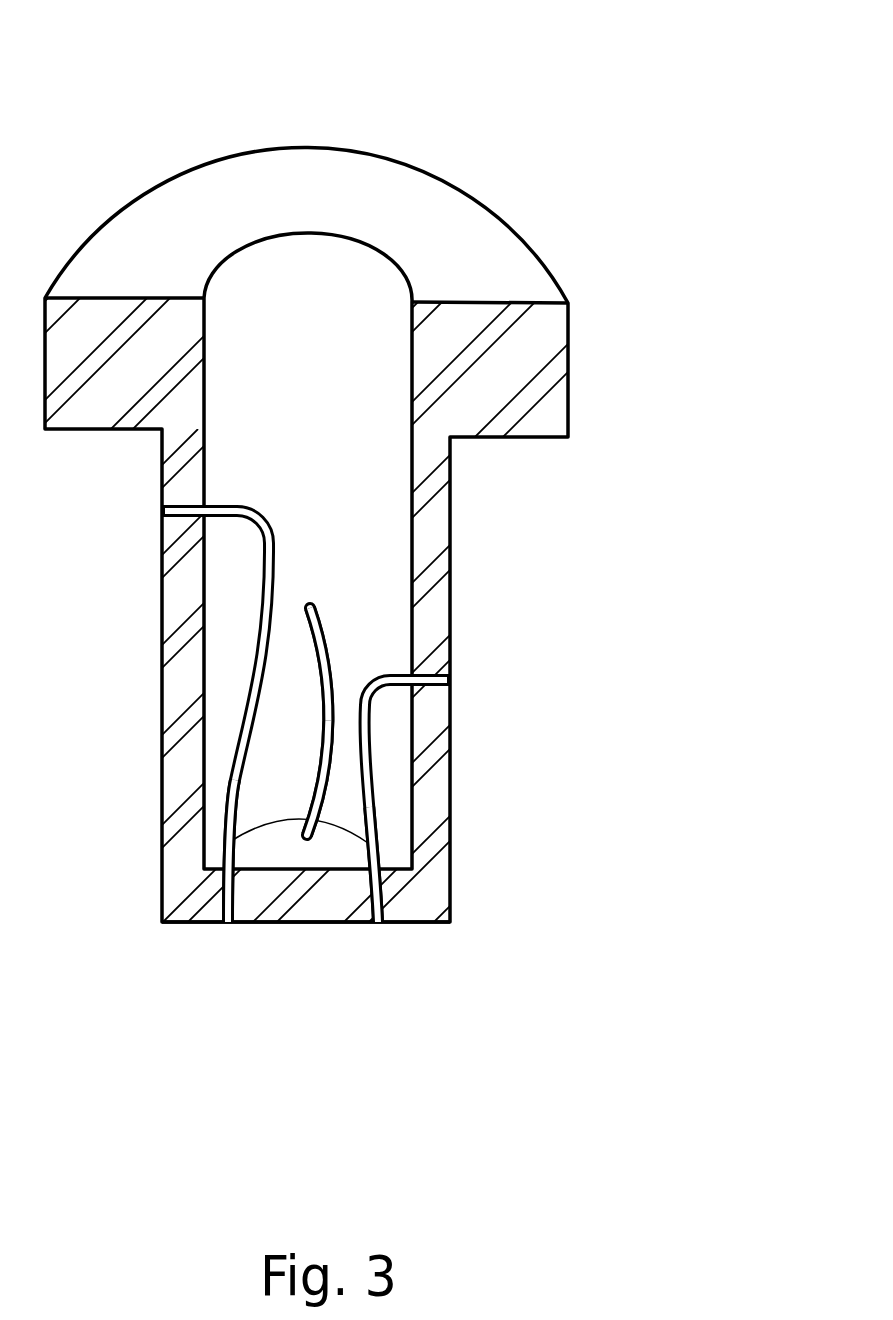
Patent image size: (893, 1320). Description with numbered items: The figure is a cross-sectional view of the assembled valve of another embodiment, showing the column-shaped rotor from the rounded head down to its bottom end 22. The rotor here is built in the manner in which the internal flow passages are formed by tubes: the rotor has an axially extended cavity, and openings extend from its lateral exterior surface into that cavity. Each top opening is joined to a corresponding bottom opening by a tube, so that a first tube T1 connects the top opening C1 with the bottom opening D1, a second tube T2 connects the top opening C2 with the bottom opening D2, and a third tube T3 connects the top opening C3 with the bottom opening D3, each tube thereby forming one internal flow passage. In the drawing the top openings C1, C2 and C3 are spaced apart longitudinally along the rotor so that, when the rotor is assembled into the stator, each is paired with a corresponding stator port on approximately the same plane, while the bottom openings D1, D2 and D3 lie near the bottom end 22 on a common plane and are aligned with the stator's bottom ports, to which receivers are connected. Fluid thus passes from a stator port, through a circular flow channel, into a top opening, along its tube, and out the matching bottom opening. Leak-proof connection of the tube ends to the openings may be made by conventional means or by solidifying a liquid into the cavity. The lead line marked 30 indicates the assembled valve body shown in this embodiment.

The cap body 30 is at (305, 352).
The bottom end 22 is at (283, 923).
The tube T1 is at (262, 527).
The top opening C1 is at (160, 508).
The bottom opening D1 is at (227, 924).
The tube T2 is at (322, 756).
The top opening C2 is at (304, 606).
The bottom opening D2 is at (305, 837).
The tube T3 is at (388, 672).
The top opening C3 is at (452, 679).
The bottom opening D3 is at (378, 925).